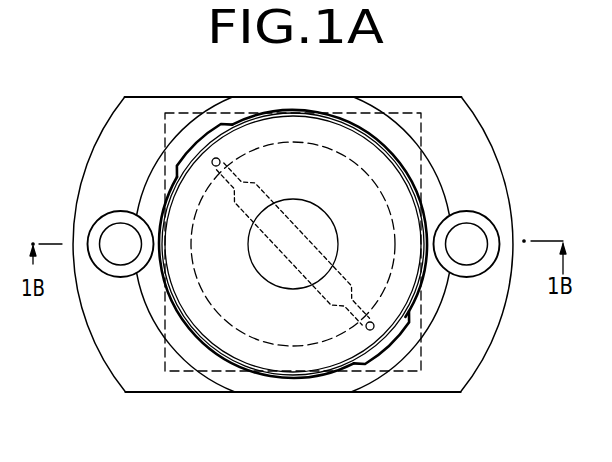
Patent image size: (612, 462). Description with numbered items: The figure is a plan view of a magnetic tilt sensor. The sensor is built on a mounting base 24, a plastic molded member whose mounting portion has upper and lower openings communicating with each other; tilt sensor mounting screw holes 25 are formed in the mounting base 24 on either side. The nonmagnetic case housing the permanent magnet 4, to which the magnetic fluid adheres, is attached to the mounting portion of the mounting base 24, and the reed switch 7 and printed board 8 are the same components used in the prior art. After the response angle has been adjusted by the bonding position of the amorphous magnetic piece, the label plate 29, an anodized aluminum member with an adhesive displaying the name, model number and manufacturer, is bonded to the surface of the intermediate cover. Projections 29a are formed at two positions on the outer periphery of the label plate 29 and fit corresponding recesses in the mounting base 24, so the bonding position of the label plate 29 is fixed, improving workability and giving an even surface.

The permanent magnet 4 is at (326, 211).
The reed switch 7 is at (265, 188).
The printed board 8 is at (396, 113).
The mounting base 24 is at (105, 335).
The tilt sensor mounting screw holes 25 is at (92, 227).
The label plate 29 is at (404, 294).
The projections 29a is at (386, 348).